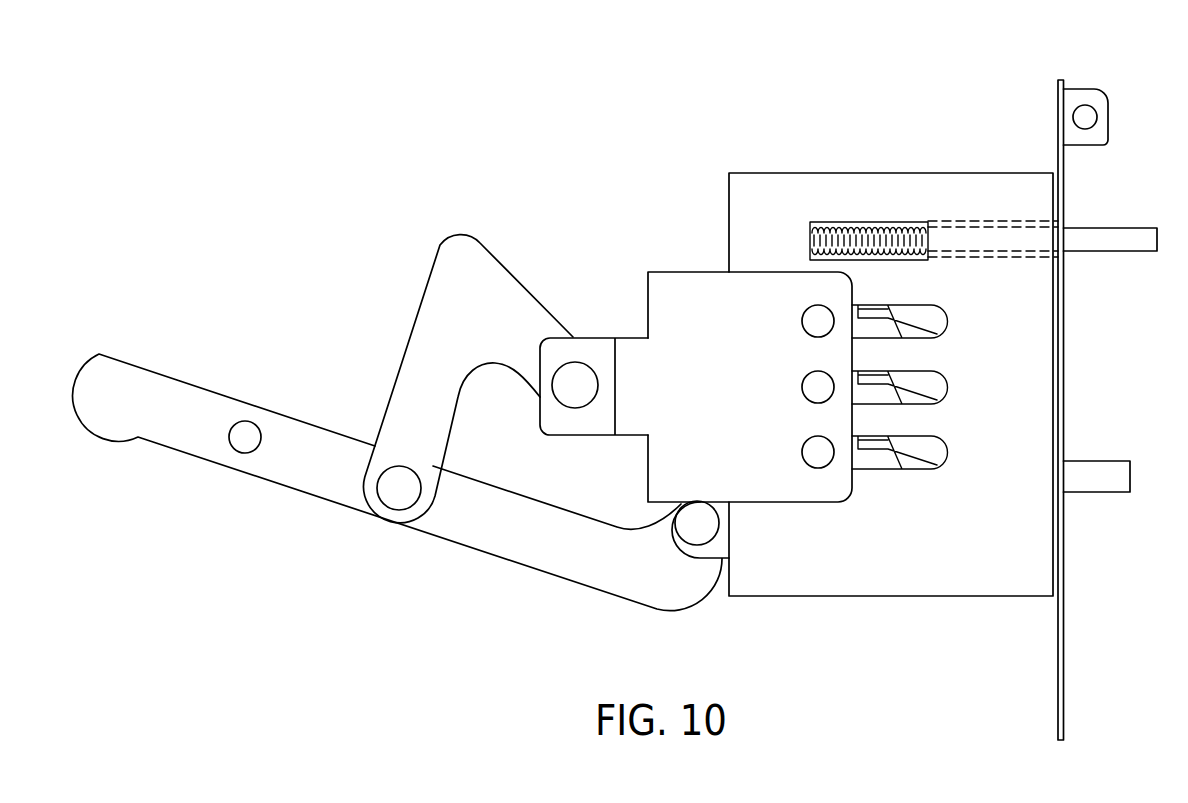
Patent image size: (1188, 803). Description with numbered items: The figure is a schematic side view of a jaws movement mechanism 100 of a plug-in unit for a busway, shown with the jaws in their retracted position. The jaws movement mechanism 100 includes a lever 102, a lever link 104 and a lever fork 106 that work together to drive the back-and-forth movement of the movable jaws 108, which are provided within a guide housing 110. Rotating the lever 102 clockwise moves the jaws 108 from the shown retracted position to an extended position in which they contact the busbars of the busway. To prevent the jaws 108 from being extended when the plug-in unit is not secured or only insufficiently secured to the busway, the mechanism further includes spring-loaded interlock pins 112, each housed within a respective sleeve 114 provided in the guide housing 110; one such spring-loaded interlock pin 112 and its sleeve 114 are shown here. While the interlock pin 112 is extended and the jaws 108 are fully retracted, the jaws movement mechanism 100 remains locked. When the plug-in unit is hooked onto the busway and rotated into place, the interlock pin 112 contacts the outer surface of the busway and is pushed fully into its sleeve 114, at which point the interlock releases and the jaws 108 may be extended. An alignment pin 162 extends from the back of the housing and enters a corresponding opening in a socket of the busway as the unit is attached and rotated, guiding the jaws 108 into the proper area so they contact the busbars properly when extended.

The jaws movement mechanism 100 is at (583, 105).
The lever 102 is at (184, 402).
The lever link 104 is at (442, 277).
The lever fork 106 is at (687, 283).
The movable jaws 108 is at (927, 386).
The guide housing 110 is at (933, 580).
The spring-loaded interlock pin 112 is at (1088, 253).
The sleeve 114 is at (910, 218).
The alignment pin 162 is at (1109, 461).